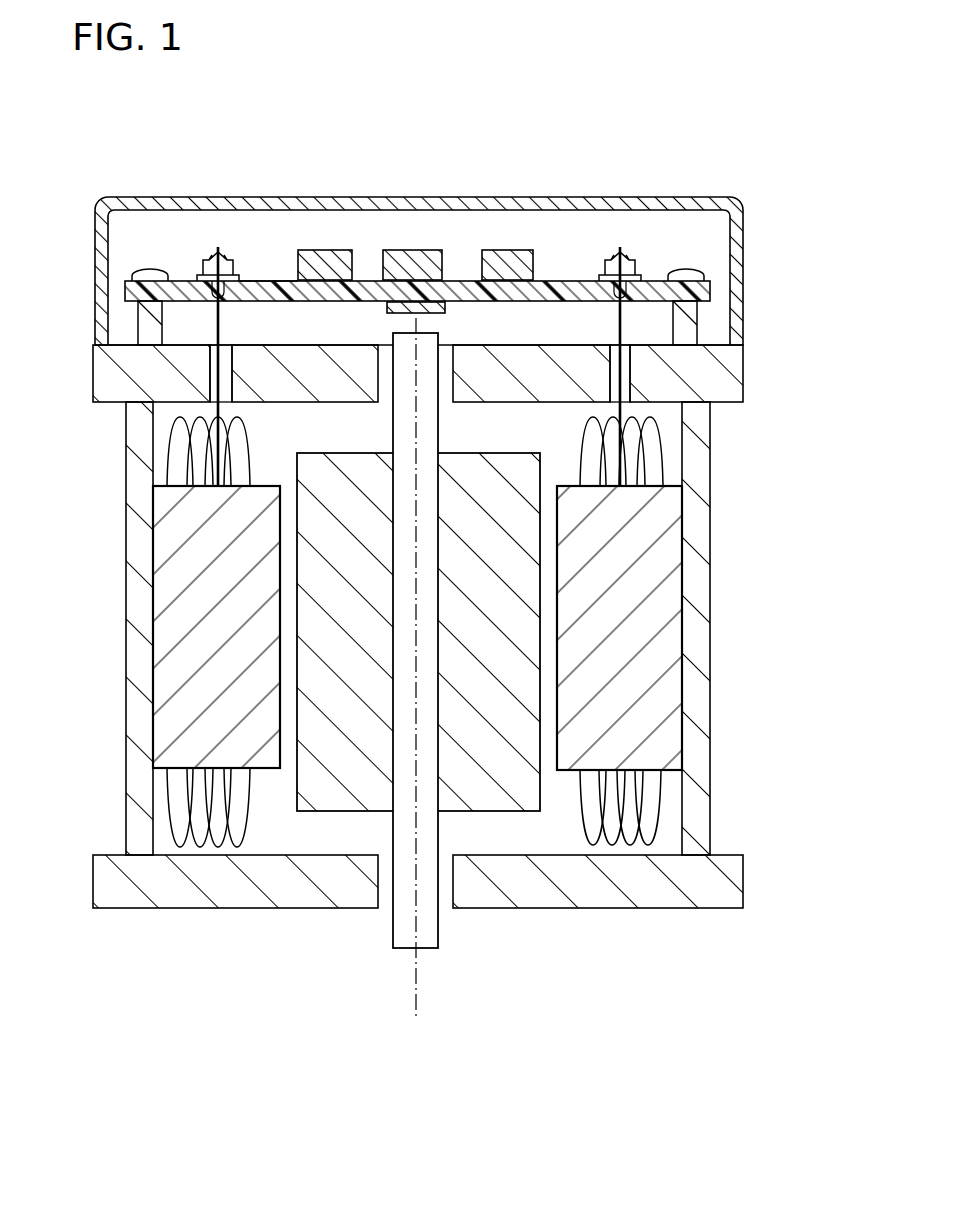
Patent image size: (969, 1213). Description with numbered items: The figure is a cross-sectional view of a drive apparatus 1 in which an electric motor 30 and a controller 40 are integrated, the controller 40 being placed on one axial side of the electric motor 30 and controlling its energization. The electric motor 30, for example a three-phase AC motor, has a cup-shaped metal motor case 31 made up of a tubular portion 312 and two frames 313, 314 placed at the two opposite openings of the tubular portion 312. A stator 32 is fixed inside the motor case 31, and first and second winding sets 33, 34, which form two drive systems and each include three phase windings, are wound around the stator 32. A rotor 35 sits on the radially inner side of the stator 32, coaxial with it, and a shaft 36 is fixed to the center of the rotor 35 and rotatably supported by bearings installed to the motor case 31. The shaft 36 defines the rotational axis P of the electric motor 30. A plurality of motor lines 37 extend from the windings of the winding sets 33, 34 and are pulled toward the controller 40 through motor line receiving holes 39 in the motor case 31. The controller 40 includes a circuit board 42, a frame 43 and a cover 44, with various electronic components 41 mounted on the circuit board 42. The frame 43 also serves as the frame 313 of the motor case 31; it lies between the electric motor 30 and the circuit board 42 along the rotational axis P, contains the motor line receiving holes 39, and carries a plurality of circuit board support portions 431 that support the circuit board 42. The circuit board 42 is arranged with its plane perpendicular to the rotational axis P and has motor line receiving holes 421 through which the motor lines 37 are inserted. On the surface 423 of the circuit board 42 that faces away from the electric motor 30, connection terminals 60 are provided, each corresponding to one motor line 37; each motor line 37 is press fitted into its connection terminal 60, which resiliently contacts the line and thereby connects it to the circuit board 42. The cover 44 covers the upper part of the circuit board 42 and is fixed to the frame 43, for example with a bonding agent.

The drive apparatus 1 is at (735, 168).
The electric motor 30 is at (728, 495).
The motor case 31 is at (443, 626).
The tubular portion 312 is at (698, 706).
The frame 313 is at (443, 373).
The frame 314 is at (727, 867).
The stator 32 is at (170, 630).
The first winding set 33 is at (350, 632).
The second winding set 34 is at (170, 450).
The rotor 35 is at (310, 695).
The shaft 36 is at (438, 925).
The motor line 37 is at (217, 328).
The motor line receiving hole 39 is at (207, 377).
The controller 40 is at (750, 250).
The electronic component 41 is at (403, 258).
The circuit board 42 is at (693, 290).
The motor line receiving hole 421 is at (217, 272).
The surface 423 is at (257, 278).
The frame 43 is at (730, 360).
The circuit board support portion 431 is at (148, 312).
The cover 44 is at (362, 206).
The connection terminal 60 is at (207, 260).
The rotational axis P is at (416, 982).